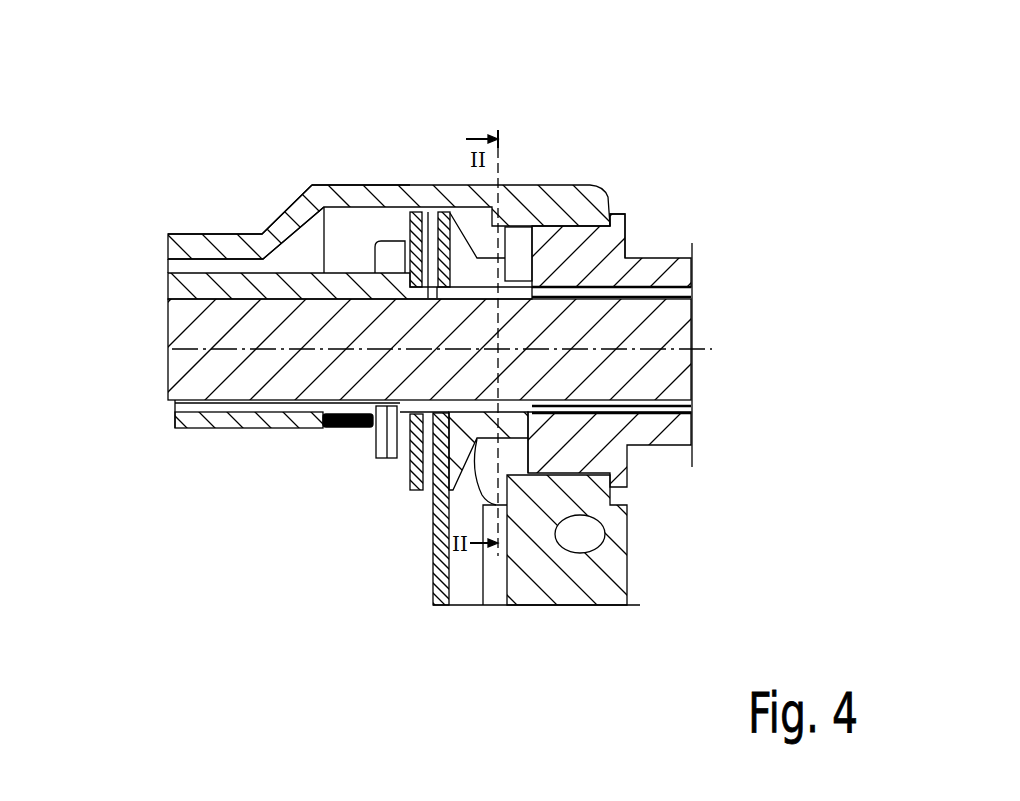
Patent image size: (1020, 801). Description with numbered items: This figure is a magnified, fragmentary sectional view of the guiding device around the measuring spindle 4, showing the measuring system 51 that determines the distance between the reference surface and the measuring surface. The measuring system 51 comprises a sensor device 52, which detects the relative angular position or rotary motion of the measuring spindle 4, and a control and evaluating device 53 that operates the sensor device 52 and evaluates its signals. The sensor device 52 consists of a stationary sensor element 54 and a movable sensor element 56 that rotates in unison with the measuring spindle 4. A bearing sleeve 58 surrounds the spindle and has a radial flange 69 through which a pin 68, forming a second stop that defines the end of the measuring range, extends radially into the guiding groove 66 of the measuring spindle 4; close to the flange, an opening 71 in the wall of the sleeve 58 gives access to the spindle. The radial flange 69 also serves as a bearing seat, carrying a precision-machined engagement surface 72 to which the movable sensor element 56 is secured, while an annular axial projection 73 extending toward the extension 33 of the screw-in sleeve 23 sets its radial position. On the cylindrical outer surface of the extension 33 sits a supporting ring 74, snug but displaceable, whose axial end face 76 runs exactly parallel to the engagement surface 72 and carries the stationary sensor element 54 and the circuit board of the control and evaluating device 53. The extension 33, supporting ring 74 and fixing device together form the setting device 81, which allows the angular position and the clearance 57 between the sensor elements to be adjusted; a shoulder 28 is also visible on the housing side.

The measuring spindle 4 is at (188, 328).
The screw-in sleeve 23 is at (692, 273).
The housing shoulder 28 is at (627, 210).
The extension 33 is at (578, 287).
The measuring system 51 is at (335, 660).
The sensor device 52 is at (410, 512).
The control and evaluating device 53 is at (432, 577).
The stationary sensor element 54 is at (453, 185).
The movable sensor element 56 is at (418, 185).
The clearance 57 is at (436, 185).
The bearing sleeve 58 is at (213, 234).
The guiding groove 66 is at (170, 407).
The pin 68 is at (376, 446).
The radial flange 69 is at (376, 257).
The opening 71 is at (317, 437).
The engagement surface 72 is at (370, 185).
The axial projection 73 is at (412, 480).
The supporting ring 74 is at (458, 284).
The axial end face 76 is at (462, 500).
The setting device 81 is at (488, 460).